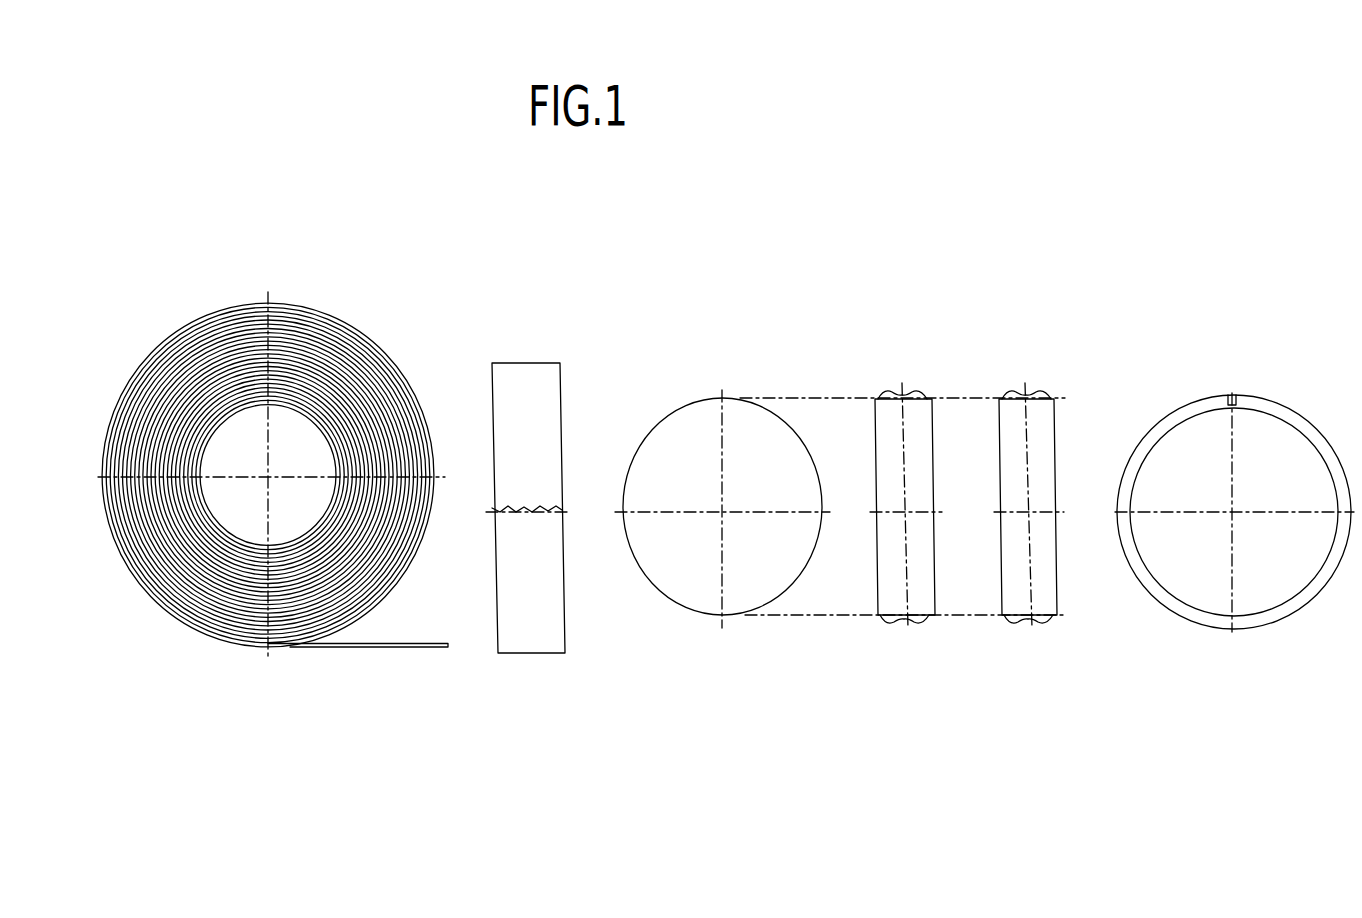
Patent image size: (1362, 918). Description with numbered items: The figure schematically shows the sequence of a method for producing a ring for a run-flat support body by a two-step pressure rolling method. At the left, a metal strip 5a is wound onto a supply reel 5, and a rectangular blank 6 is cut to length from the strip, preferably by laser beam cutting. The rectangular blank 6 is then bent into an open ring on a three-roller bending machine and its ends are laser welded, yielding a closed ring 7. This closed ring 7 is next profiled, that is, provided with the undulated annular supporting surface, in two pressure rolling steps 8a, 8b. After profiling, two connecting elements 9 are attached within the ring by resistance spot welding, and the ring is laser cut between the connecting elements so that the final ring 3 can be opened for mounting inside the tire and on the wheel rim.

The supply reel 5 is at (218, 362).
The metal strip 5a is at (400, 645).
The rectangular blank 6 is at (537, 627).
The closed ring 7 is at (742, 410).
The first profiling step 8a is at (910, 595).
The second profiling step 8b is at (1038, 595).
The final ring 3 is at (1287, 603).
The connecting element 9 is at (1232, 395).